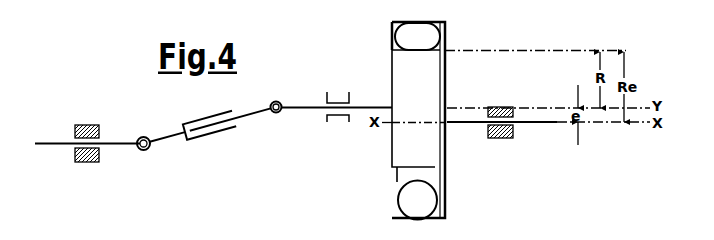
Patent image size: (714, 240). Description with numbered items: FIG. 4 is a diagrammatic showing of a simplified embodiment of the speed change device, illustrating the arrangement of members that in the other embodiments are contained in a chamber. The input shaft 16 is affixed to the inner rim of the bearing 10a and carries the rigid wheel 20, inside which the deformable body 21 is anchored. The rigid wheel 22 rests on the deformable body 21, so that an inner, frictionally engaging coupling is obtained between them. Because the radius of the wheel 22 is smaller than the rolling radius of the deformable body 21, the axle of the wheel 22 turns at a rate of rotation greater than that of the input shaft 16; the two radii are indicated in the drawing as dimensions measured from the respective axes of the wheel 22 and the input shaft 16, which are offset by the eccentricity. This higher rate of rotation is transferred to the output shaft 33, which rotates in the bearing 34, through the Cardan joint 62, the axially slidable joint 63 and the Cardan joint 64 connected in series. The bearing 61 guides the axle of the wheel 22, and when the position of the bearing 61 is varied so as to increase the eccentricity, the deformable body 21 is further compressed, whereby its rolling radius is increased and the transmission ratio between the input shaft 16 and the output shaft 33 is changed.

The bearing 10a is at (493, 138).
The input shaft 16 is at (533, 123).
The rigid wheel 20 is at (447, 68).
The deformable body 21 is at (395, 38).
The rigid wheel 22 is at (392, 67).
The output shaft 33 is at (45, 145).
The bearing 34 is at (92, 123).
The bearing 61 is at (327, 117).
The Cardan joint 62 is at (277, 117).
The axially slidable joint 63 is at (207, 138).
The Cardan joint 64 is at (147, 152).